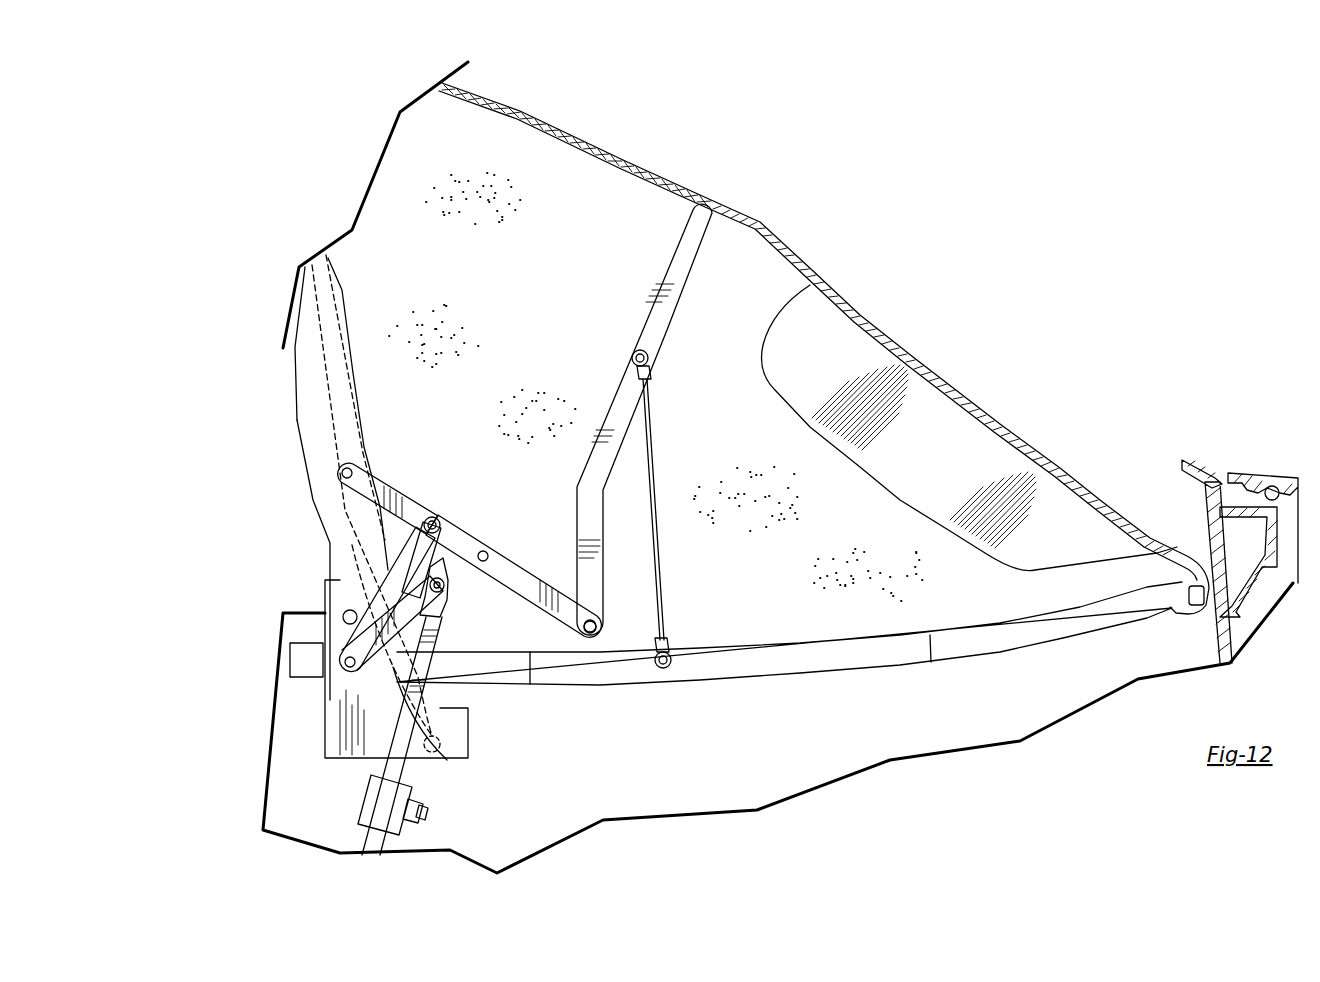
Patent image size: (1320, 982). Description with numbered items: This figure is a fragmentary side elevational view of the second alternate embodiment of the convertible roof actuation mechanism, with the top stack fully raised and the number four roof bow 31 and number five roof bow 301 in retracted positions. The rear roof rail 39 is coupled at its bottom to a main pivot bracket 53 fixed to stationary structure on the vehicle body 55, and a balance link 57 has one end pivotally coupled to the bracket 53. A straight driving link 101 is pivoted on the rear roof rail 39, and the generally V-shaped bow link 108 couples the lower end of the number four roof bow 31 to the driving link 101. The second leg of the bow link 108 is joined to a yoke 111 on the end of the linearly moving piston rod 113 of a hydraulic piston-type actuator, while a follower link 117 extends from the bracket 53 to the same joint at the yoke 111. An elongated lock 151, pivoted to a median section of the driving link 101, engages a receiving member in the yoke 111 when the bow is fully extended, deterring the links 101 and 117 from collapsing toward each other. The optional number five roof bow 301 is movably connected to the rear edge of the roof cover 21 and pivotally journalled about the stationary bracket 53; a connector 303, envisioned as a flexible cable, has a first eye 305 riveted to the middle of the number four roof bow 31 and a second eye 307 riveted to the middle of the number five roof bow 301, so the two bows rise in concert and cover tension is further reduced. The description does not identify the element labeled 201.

The roof cover 21 is at (627, 162).
The number four roof bow 31 is at (670, 277).
The rear roof rail 39 is at (310, 393).
The main pivot bracket 53 is at (340, 722).
The body 55 is at (683, 768).
The balance link 57 is at (308, 297).
The driving link 101 is at (393, 500).
The bow link 108 is at (527, 580).
The yoke 111 is at (440, 613).
The piston rod 113 is at (393, 767).
The follower link 117 is at (412, 617).
The lock 151 is at (417, 572).
The glass panel 201 is at (897, 417).
The number five roof bow 301 is at (813, 660).
The connector 303 is at (650, 458).
The first eye 305 is at (648, 360).
The second eye 307 is at (660, 670).